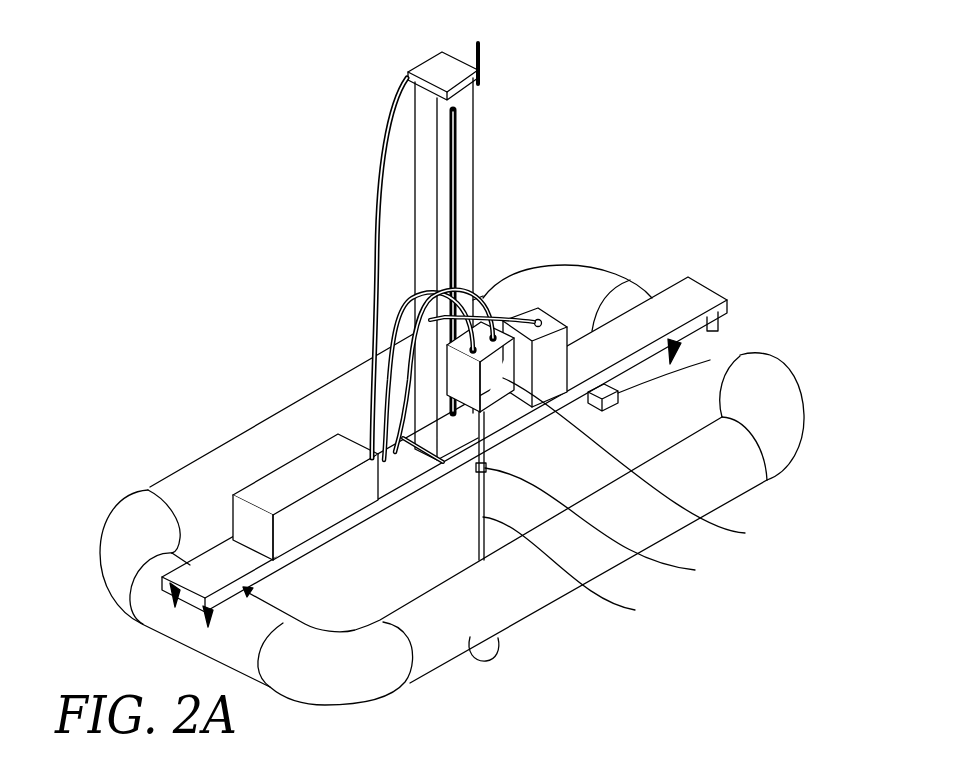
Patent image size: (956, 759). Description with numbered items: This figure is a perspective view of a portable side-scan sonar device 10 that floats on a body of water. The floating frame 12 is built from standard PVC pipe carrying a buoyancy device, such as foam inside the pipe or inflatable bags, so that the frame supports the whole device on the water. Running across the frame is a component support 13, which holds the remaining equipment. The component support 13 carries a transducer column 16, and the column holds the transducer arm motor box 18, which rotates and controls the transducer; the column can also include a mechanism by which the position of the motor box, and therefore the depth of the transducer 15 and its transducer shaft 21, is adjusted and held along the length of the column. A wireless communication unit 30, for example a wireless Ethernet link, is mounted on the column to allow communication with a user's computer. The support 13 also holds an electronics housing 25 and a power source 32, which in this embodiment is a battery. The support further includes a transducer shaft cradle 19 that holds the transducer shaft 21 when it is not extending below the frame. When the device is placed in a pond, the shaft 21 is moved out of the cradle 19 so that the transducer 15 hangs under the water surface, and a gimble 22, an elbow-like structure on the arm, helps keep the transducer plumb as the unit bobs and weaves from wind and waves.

The system 10 is at (220, 317).
The frame 12 is at (125, 525).
The component support 13 is at (700, 294).
The transducer 15 is at (487, 650).
The transducer column 16 is at (462, 148).
The transducer arm motor box 18 is at (638, 464).
The transducer shaft cradle 19 is at (560, 408).
The transducer shaft 21 is at (573, 571).
The gimble 22 is at (604, 528).
The electronics housing 25 is at (263, 490).
The wireless communication unit 30 is at (437, 67).
The power source 32 is at (552, 322).